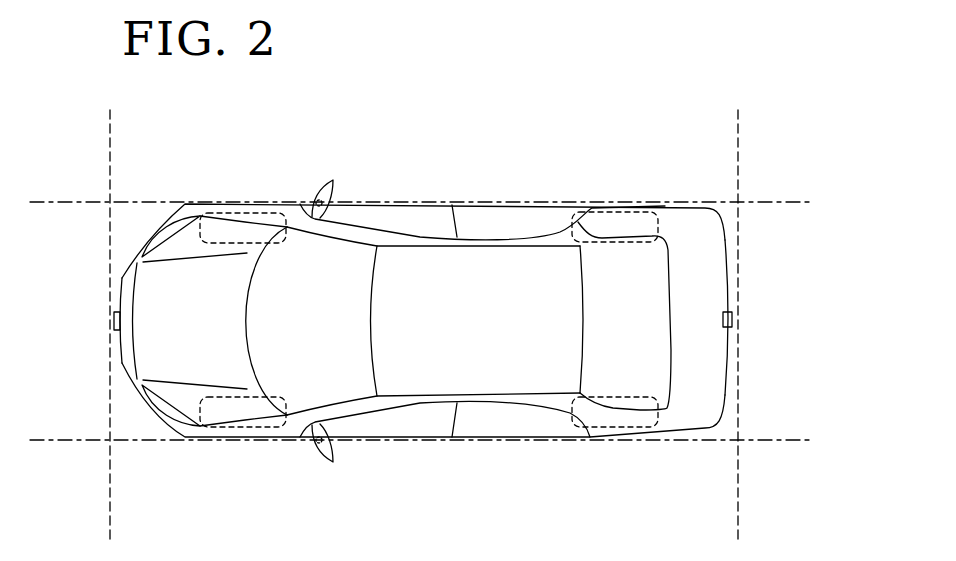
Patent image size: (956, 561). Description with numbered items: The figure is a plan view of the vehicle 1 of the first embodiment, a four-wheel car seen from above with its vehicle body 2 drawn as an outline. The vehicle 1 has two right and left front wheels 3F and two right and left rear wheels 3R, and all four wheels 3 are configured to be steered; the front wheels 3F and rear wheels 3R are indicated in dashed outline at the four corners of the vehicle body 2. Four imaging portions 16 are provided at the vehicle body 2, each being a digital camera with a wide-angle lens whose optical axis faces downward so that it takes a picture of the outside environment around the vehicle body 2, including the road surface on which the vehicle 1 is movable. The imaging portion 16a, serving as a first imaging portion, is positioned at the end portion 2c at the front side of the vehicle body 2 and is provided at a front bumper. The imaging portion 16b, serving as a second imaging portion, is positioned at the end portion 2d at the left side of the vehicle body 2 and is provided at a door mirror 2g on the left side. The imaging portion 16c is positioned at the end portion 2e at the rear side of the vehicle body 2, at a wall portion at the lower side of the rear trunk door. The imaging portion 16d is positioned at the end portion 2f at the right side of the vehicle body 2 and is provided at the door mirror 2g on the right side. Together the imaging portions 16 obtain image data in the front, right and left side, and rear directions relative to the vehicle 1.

The vehicle 1 is at (533, 119).
The vehicle body 2 is at (681, 201).
The end portion at front side 2c is at (117, 337).
The end portion at left side 2d is at (518, 440).
The end portion at rear side 2e is at (733, 338).
The end portion at right side 2f is at (526, 201).
The door mirror 2g is at (336, 182).
The wheels 3 is at (429, 321).
The front wheels 3F is at (242, 212).
The rear wheels 3R is at (612, 211).
The imaging portions 16 is at (433, 336).
The imaging portion 16a is at (115, 320).
The imaging portion 16b is at (318, 458).
The imaging portion 16c is at (733, 318).
The imaging portion 16d is at (318, 182).